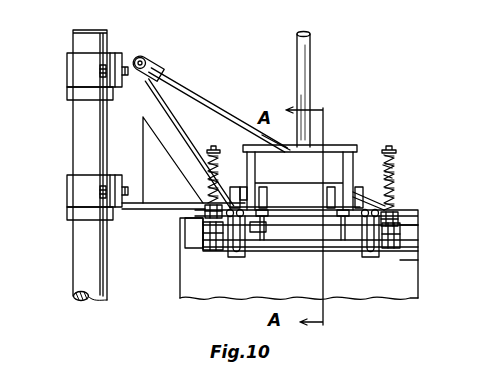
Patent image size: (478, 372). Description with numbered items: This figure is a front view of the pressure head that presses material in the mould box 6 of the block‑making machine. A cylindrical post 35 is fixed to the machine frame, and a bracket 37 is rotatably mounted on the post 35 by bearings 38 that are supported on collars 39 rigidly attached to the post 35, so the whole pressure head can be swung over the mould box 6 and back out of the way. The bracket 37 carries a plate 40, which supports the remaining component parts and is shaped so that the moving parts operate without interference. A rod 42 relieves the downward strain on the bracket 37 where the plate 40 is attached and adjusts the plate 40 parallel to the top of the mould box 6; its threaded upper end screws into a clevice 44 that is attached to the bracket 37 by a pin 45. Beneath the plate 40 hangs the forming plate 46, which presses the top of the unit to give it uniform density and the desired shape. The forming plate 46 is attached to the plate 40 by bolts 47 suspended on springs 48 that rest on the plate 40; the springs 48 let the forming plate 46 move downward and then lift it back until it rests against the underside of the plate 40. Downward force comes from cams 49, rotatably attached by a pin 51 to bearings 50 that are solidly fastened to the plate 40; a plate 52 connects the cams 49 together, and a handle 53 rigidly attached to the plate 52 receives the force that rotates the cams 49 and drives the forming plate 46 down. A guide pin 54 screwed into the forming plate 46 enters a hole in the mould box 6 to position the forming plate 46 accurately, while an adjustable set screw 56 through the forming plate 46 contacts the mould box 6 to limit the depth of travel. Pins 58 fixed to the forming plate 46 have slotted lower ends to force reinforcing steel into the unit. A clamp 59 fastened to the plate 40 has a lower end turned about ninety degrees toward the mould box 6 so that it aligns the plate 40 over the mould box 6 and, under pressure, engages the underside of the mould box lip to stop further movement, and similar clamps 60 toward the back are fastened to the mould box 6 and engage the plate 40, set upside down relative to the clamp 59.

The mould box 6 is at (418, 292).
The cylindrical post 35 is at (73, 240).
The bracket 37 is at (160, 209).
The bearings 38 is at (67, 65).
The collars 39 is at (67, 96).
The plate 40 is at (418, 212).
The rod 42 is at (195, 92).
The clevice 44 is at (160, 67).
The pin 45 is at (141, 57).
The forming plate 46 is at (410, 241).
The bolts 47 is at (213, 146).
The springs 48 is at (197, 193).
The cams 49 is at (247, 160).
The bearings 50 is at (327, 198).
The pin 51 is at (242, 188).
The plate 52 is at (266, 138).
The handle 53 is at (311, 84).
The guide pin 54 is at (262, 242).
The set screw 56 is at (207, 210).
The pins 58 is at (214, 251).
The clamp 59 is at (236, 258).
The clamps 60 is at (185, 238).